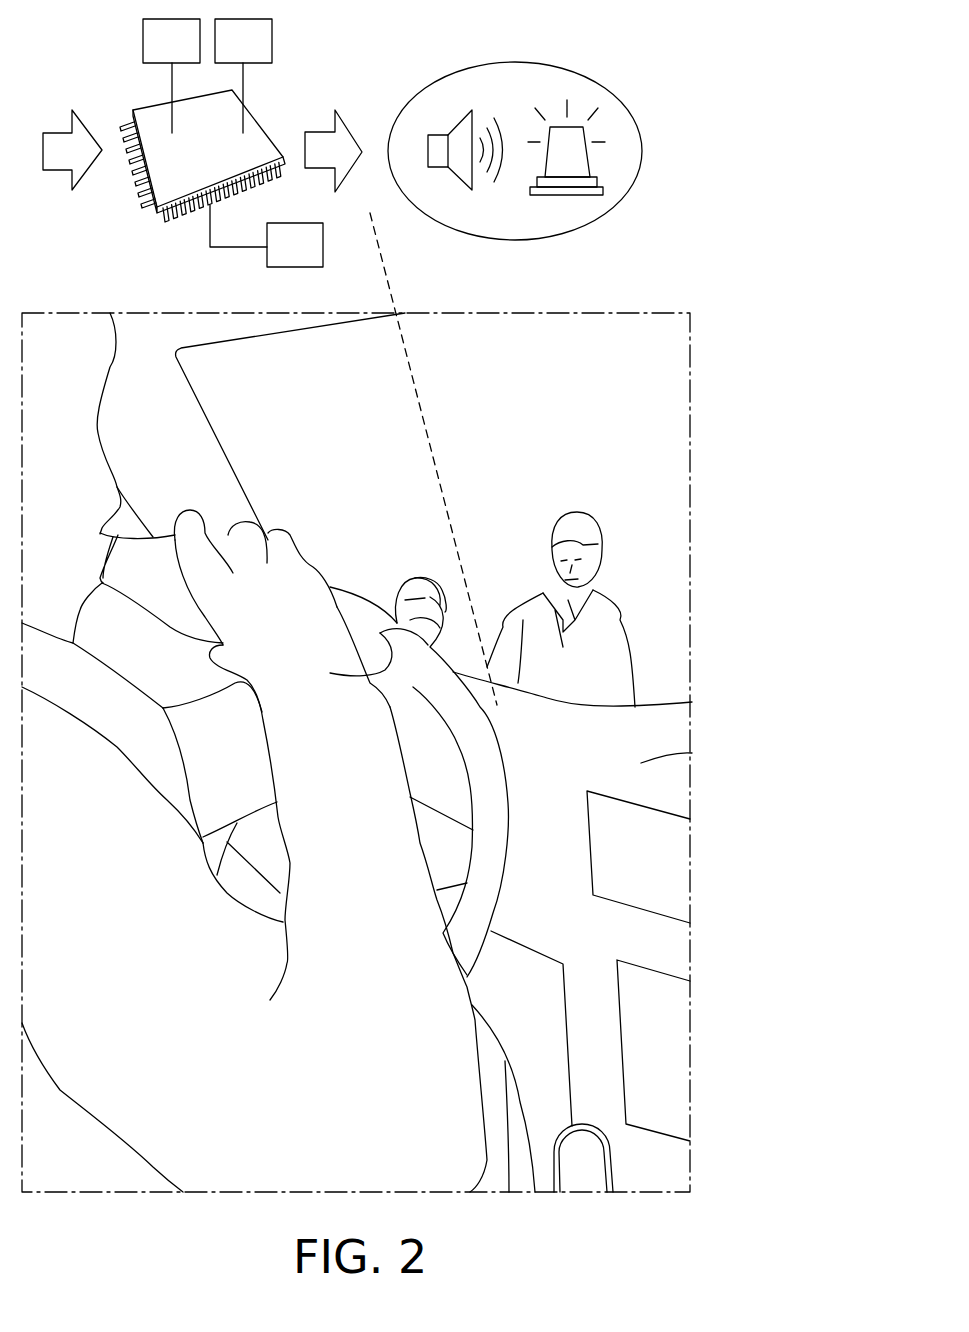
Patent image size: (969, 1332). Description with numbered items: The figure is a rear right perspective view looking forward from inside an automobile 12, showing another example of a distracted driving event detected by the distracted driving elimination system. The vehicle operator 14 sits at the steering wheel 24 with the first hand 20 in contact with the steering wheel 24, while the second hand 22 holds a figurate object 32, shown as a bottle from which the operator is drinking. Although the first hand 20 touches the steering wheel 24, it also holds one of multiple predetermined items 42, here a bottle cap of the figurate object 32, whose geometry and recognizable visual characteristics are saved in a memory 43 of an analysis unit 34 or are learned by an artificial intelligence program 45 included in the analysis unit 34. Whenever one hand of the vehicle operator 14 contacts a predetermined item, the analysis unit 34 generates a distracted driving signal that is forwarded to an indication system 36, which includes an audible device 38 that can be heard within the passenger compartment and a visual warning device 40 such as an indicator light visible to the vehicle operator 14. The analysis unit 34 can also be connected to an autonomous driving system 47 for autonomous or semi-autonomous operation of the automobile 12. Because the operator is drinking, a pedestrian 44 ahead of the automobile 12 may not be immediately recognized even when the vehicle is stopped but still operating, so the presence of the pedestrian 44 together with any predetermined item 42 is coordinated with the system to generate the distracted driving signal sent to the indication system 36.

The automobile 12 is at (641, 763).
The vehicle operator 14 is at (415, 1177).
The first hand 20 is at (407, 590).
The second hand 22 is at (268, 540).
The steering wheel 24 is at (491, 817).
The figurate object 32 is at (142, 550).
The analysis unit 34 is at (150, 118).
The indication system 36 is at (557, 65).
The audible device 38 is at (458, 120).
The visual warning device 40 is at (583, 137).
The predetermined item 42 is at (428, 592).
The memory 43 is at (230, 55).
The pedestrian 44 is at (590, 527).
The artificial intelligence program 45 is at (282, 259).
The autonomous driving system 47 is at (158, 55).